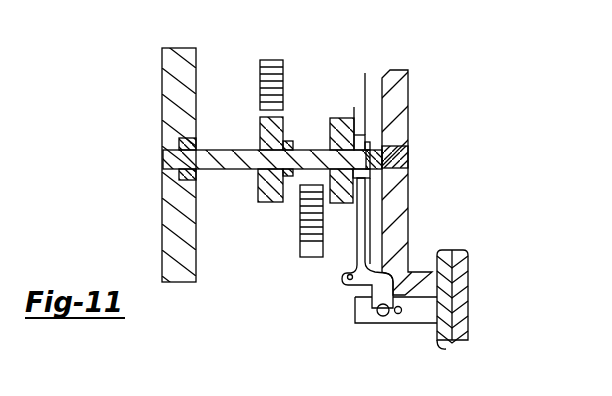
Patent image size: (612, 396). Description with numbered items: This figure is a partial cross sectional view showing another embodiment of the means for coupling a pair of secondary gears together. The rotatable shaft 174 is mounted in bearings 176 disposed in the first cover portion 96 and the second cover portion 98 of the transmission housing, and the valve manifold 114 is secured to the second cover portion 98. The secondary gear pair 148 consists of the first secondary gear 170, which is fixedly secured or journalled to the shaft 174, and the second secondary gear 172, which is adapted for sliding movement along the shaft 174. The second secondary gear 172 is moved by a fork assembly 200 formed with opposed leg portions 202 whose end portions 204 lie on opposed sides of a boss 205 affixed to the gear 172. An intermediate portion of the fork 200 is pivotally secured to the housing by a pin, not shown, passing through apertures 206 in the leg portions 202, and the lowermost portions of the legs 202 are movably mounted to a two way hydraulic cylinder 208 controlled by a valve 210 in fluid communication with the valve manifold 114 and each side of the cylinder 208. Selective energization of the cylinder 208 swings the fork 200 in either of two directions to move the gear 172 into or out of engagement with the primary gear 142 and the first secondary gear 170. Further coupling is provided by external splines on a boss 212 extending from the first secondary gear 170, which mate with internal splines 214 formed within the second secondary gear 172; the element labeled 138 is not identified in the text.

The first cover portion 96 is at (165, 124).
The rotatable shaft 174 is at (238, 150).
The bearings 176 is at (197, 180).
The gear 138 is at (262, 79).
The first secondary gear 170 is at (268, 204).
The boss 212 is at (288, 143).
The primary gear 142 is at (312, 257).
The internal splines 214 is at (330, 149).
The second secondary gear 172 is at (354, 107).
The end portions 204 is at (365, 73).
The secondary gear pair 148 is at (383, 27).
The second cover portion 98 is at (410, 98).
The boss 205 is at (374, 184).
The leg portions 202 is at (362, 240).
The apertures 206 is at (347, 275).
The fork assembly 200 is at (375, 350).
The two way hydraulic cylinder 208 is at (408, 325).
The valve manifold 114 is at (469, 292).
The valve 210 is at (444, 342).